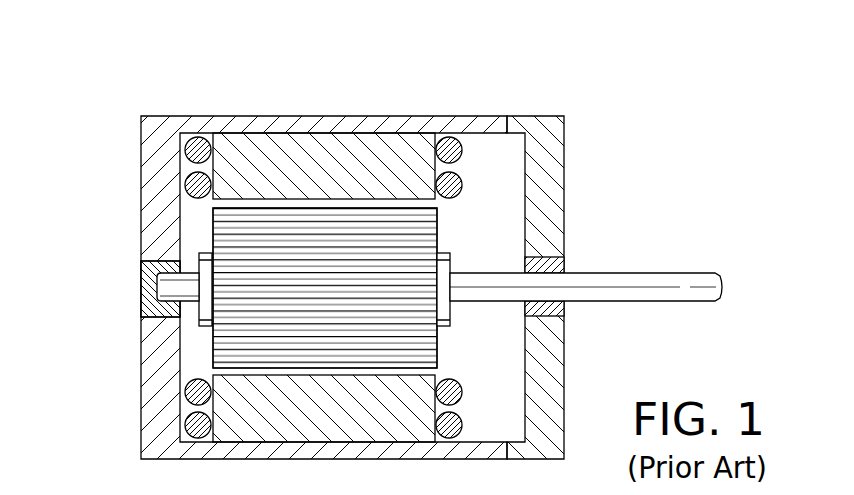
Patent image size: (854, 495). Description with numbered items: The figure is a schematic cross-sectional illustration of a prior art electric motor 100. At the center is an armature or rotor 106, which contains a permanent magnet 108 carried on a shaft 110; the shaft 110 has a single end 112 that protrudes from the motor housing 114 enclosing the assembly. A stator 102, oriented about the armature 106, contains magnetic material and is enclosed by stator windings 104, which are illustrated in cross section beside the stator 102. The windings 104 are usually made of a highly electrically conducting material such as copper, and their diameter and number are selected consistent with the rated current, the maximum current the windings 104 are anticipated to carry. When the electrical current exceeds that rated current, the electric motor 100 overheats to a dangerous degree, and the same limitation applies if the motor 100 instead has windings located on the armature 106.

The electric motor 100 is at (418, 247).
The stator 102 is at (335, 150).
The stator windings 104 is at (187, 138).
The armature 106 is at (423, 254).
The permanent magnet 108 is at (212, 350).
The shaft 110 is at (476, 291).
The single end 112 is at (723, 287).
The motor housing 114 is at (141, 418).